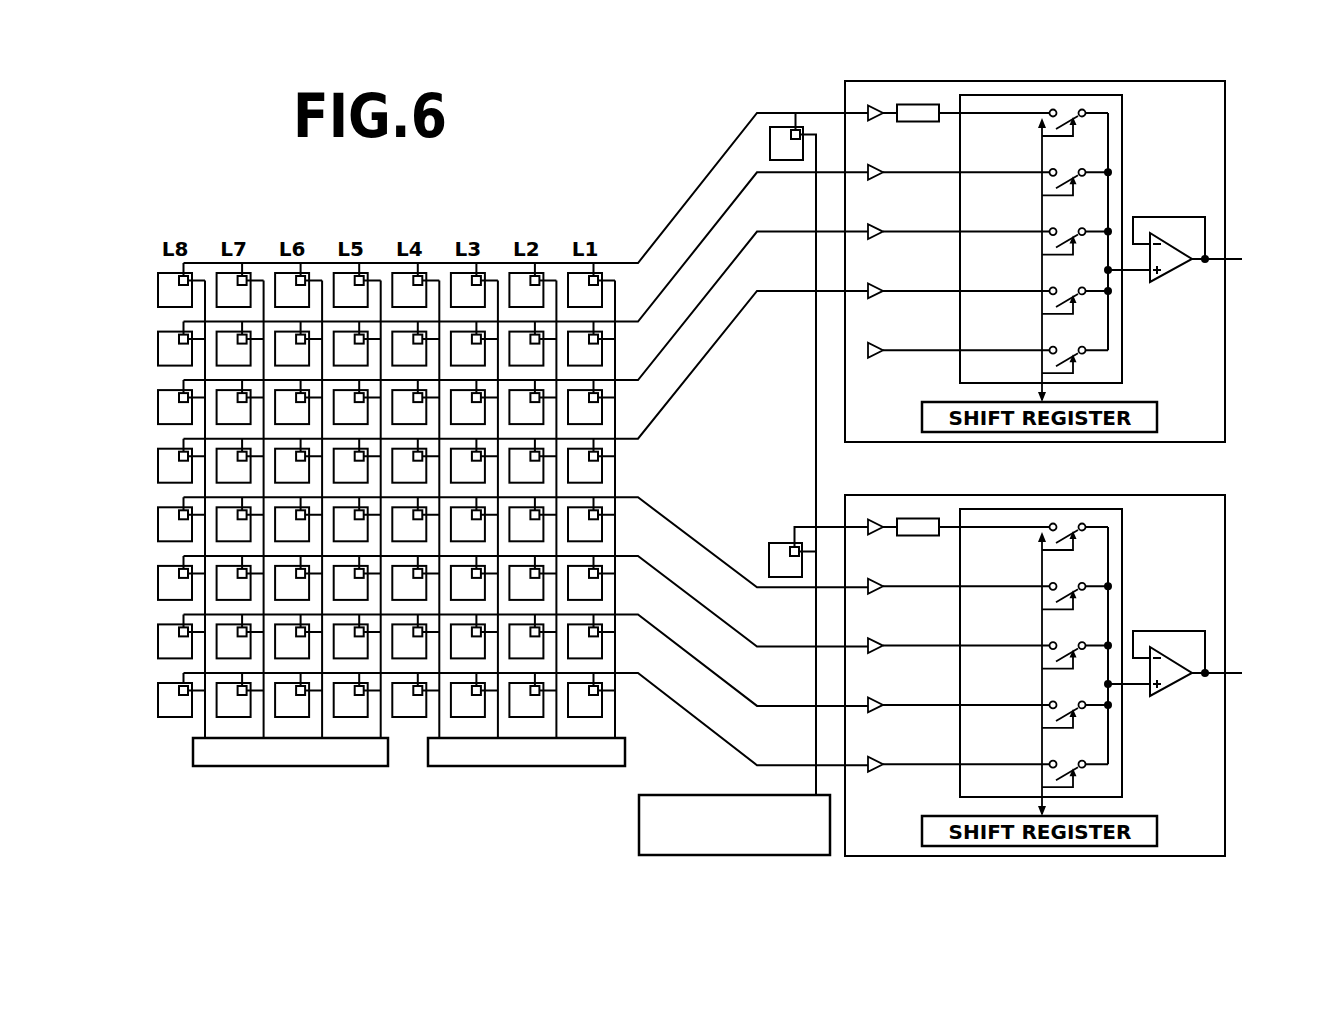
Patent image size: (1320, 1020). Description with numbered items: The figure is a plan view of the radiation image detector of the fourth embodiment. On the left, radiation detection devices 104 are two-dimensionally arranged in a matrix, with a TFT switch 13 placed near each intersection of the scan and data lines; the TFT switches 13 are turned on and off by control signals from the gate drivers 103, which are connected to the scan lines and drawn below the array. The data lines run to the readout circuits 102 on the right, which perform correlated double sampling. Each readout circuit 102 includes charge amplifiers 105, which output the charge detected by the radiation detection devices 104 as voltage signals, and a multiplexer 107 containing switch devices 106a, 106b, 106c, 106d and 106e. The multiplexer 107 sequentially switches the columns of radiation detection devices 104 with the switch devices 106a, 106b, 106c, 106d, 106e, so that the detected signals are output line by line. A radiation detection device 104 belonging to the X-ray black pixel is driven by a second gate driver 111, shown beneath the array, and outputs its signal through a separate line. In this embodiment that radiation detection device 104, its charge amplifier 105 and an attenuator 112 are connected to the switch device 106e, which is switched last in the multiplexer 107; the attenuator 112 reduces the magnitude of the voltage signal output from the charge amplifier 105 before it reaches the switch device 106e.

The TFT switch 13 is at (179, 690).
The readout circuit 102 is at (1226, 95).
The gate driver 103 is at (255, 767).
The radiation detection device 104 is at (174, 701).
The charge amplifier 105 is at (877, 360).
The switch device 106a is at (1072, 353).
The switch device 106b is at (1072, 294).
The switch device 106c is at (1072, 235).
The switch device 106d is at (1072, 176).
The switch device 106e is at (1068, 112).
The multiplexer 107 is at (1124, 104).
The second gate driver 111 is at (639, 823).
The attenuator 112 is at (916, 104).